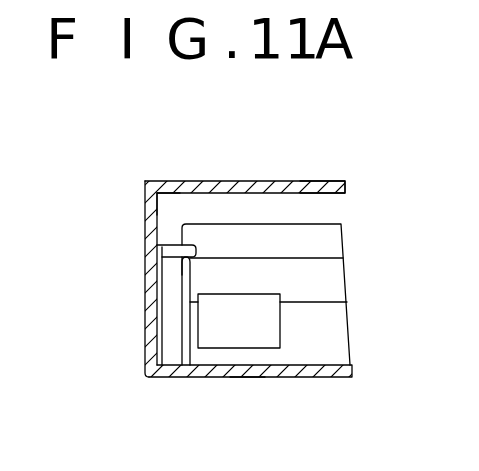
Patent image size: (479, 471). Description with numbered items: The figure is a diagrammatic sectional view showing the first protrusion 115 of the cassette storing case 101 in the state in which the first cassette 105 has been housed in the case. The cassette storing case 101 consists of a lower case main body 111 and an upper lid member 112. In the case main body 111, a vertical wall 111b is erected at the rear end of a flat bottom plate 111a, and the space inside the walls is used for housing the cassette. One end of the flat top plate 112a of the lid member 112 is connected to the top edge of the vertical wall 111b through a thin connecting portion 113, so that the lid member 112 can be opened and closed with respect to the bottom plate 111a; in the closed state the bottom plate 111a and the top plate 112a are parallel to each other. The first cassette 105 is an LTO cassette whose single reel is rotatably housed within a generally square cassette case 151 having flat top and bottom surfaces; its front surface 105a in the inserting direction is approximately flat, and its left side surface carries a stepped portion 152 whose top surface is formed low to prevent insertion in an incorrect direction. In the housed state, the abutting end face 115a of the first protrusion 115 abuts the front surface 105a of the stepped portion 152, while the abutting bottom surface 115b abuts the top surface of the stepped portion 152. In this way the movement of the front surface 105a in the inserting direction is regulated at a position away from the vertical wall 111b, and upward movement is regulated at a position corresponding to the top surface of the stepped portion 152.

The cassette storing case 101 is at (322, 123).
The first cassette 105 is at (345, 248).
The front surface 105a is at (182, 333).
The case main body 111 is at (308, 380).
The bottom plate 111a is at (247, 378).
The vertical wall 111b is at (145, 318).
The lid member 112 is at (252, 178).
The top plate 112a is at (303, 183).
The thin connecting portion 113 is at (168, 237).
The first protrusion 115 is at (150, 221).
The abutting end face 115a is at (162, 281).
The abutting bottom surface 115b is at (185, 254).
The cassette case 151 is at (341, 322).
The stepped portion 152 is at (208, 258).